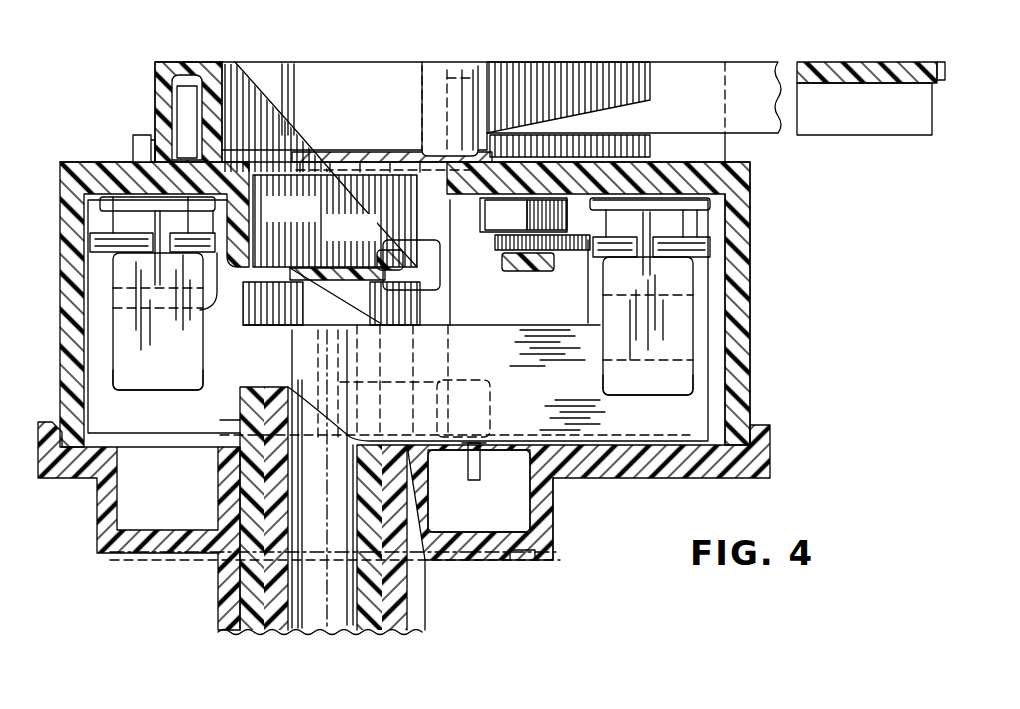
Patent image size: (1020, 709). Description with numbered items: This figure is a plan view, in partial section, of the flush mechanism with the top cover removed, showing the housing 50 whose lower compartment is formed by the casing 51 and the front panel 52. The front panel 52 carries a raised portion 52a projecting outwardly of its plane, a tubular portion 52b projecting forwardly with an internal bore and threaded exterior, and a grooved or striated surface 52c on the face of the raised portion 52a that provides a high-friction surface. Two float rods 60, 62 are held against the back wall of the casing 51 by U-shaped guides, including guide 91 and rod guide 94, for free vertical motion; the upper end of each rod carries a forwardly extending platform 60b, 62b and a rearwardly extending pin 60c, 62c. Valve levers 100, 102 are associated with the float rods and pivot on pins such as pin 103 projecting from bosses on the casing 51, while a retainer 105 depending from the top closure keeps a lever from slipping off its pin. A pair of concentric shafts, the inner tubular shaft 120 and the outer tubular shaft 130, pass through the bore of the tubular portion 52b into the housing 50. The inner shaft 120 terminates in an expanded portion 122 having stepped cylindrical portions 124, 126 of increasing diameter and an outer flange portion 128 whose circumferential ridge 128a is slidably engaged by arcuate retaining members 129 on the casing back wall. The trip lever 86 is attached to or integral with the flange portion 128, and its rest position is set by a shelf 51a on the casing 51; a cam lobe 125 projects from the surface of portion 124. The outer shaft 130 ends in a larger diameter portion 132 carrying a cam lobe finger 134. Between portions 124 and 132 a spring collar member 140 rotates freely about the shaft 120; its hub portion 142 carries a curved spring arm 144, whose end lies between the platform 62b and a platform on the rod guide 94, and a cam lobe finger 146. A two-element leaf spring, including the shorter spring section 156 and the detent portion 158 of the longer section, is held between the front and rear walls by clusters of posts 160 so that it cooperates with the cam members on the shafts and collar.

The housing 50 is at (760, 317).
The casing 51 is at (434, 254).
The shelf 51a is at (727, 150).
The front panel 52 is at (722, 470).
The raised portion 52a is at (553, 522).
The tubular portion 52b is at (425, 627).
The grooved or striated surface 52c is at (535, 560).
The float rod 60 is at (143, 265).
The forwardly extending platform 60b is at (158, 378).
The rearwardly extending pin 60c is at (163, 215).
The float rod 62 is at (718, 312).
The forwardly extending platform 62b is at (660, 380).
The rearwardly extending pin 62c is at (648, 217).
The trip lever 86 is at (895, 137).
The guide 91 is at (117, 265).
The rod guide 94 is at (720, 335).
The valve lever 100 is at (90, 243).
The valve lever 102 is at (728, 262).
The pivot pin 103 is at (513, 196).
The retainer 105 is at (560, 271).
The inner tubular shaft 120 is at (288, 632).
The expanded portion 122 is at (180, 60).
The stepped cylindrical portion 124 is at (250, 214).
The cam lobe 125 is at (408, 245).
The stepped cylindrical portion 126 is at (270, 165).
The outer flange portion 128 is at (157, 84).
The circumferential ridge 128a is at (150, 147).
The arcuate retaining member 129 is at (133, 150).
The outer tubular shaft 130 is at (265, 635).
The larger diameter portion 132 is at (240, 412).
The cam lobe finger 134 is at (423, 404).
The spring collar member 140 is at (470, 320).
The hub portion 142 is at (385, 299).
The spring arm 144 is at (557, 380).
The cam lobe finger 146 is at (407, 304).
The spring section 156 is at (440, 465).
The detent portion 158 is at (415, 198).
The post 160 is at (462, 192).